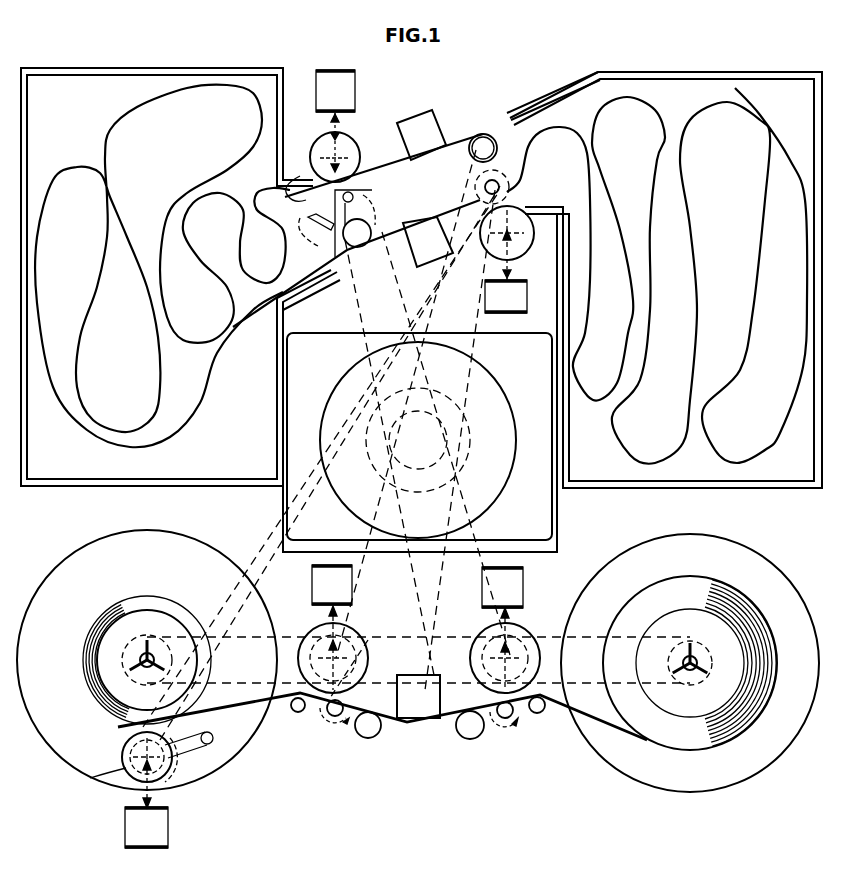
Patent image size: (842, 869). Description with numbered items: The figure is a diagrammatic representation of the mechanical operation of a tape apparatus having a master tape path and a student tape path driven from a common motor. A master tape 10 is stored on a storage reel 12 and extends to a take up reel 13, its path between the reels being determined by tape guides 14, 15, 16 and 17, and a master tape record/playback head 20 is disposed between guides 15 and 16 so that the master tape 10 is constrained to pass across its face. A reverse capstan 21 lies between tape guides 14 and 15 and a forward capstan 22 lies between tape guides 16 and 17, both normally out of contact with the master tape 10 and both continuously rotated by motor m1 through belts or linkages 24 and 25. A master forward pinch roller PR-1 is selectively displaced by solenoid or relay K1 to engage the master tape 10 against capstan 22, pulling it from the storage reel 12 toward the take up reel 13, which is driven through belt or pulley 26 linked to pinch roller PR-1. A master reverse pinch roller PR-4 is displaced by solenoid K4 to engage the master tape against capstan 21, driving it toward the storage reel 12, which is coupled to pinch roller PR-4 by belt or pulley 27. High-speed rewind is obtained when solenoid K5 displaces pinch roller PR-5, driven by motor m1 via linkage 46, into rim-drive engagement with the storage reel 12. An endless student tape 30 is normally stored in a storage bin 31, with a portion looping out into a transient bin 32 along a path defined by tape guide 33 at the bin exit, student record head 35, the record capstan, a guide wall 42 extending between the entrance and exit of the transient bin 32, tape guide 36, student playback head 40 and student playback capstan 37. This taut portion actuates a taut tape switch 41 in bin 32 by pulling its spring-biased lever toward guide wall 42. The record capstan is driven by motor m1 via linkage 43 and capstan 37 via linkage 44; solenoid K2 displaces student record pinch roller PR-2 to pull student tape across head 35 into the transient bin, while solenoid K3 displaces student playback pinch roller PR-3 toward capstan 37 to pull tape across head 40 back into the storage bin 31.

The master tape 10 is at (446, 722).
The storage reel 12 is at (180, 544).
The take up reel 13 is at (757, 564).
The tape guide 14 is at (296, 714).
The tape guide 15 is at (370, 740).
The tape guide 16 is at (470, 744).
The tape guide 17 is at (538, 714).
The master tape record/playback head 20 is at (421, 718).
The reverse capstan 21 is at (332, 726).
The forward capstan 22 is at (507, 724).
The belt or linkage 24 is at (398, 606).
The belt or linkage 25 is at (440, 618).
The belt or pulley 26 is at (584, 636).
The belt or pulley 27 is at (290, 630).
The endless student tape 30 is at (636, 338).
The storage bin 31 is at (664, 280).
The transient bin 32 is at (232, 449).
The tape guide 33 is at (483, 136).
The student record head 35 is at (415, 115).
The tape guide 36 is at (355, 244).
The student playback capstan 37 is at (500, 191).
The student playback head 40 is at (439, 261).
The taut tape switch 41 is at (306, 213).
The guide wall 42 is at (312, 181).
The linkage 43 is at (353, 311).
The linkage 44 is at (434, 352).
The linkage 46 is at (267, 578).
The motor m1 is at (494, 398).
The solenoid or relay K1 is at (502, 587).
The solenoid K2 is at (335, 91).
The solenoid K3 is at (506, 296).
The solenoid K4 is at (332, 585).
The solenoid K5 is at (146, 827).
The master forward pinch roller PR-1 is at (528, 627).
The student record pinch roller PR-2 is at (364, 133).
The student playback pinch roller PR-3 is at (516, 236).
The master reverse pinch roller PR-4 is at (368, 654).
The pinch roller PR-5 is at (102, 778).